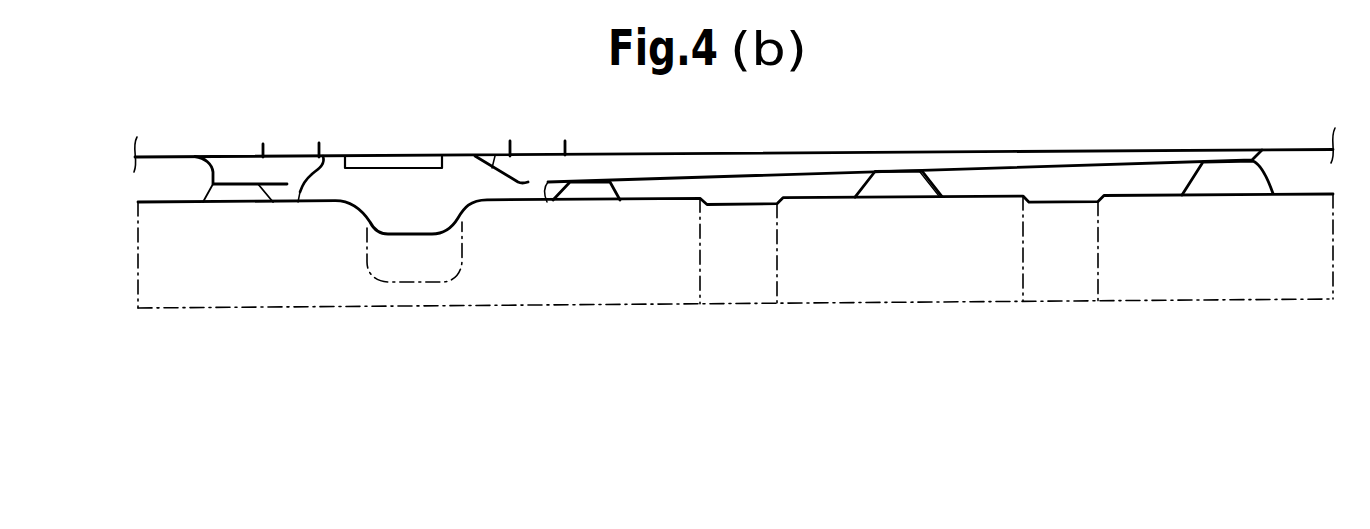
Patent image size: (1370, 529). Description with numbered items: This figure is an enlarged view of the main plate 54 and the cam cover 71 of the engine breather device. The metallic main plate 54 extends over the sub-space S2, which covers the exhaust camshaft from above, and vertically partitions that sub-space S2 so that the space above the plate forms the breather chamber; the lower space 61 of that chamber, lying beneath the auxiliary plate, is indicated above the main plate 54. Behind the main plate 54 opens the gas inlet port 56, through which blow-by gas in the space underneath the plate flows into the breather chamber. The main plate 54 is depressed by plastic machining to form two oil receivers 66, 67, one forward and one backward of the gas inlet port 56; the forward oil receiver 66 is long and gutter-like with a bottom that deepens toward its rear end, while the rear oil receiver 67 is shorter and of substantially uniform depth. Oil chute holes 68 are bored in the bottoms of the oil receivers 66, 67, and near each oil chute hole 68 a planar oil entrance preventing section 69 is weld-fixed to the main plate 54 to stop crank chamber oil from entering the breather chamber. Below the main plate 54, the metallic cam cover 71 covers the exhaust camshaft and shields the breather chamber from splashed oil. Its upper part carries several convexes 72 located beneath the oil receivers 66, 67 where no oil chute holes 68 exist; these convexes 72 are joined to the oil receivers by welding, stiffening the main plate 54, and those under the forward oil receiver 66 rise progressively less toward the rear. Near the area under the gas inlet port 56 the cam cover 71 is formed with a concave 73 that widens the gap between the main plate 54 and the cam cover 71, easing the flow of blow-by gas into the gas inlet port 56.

The main plate 54 is at (1278, 150).
The gas inlet port 56 is at (355, 160).
The lower space 61 is at (968, 133).
The oil receiver 66 is at (496, 156).
The oil receiver 67 is at (208, 156).
The oil chute hole 68 is at (302, 204).
The oil entrance preventing section 69 is at (283, 156).
The cam cover 71 is at (153, 204).
The convex 72 is at (208, 197).
The concave 73 is at (460, 262).
The sub-space S2 is at (753, 343).